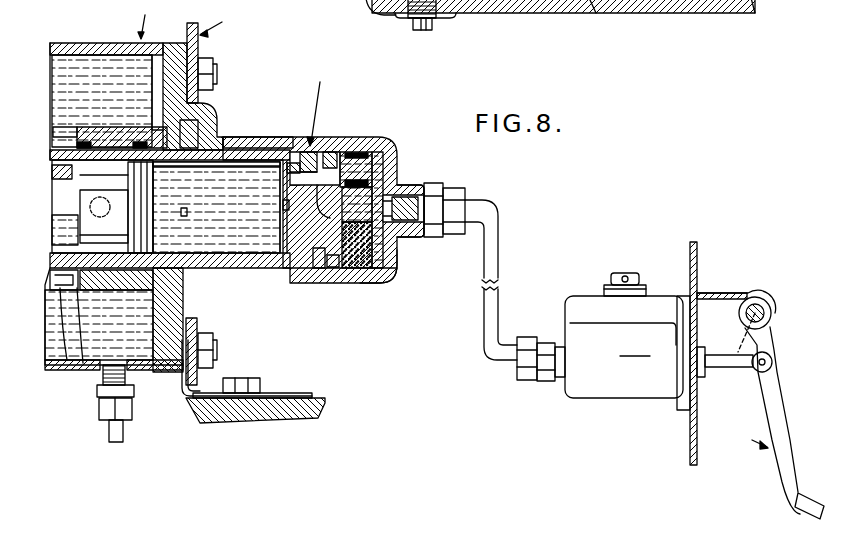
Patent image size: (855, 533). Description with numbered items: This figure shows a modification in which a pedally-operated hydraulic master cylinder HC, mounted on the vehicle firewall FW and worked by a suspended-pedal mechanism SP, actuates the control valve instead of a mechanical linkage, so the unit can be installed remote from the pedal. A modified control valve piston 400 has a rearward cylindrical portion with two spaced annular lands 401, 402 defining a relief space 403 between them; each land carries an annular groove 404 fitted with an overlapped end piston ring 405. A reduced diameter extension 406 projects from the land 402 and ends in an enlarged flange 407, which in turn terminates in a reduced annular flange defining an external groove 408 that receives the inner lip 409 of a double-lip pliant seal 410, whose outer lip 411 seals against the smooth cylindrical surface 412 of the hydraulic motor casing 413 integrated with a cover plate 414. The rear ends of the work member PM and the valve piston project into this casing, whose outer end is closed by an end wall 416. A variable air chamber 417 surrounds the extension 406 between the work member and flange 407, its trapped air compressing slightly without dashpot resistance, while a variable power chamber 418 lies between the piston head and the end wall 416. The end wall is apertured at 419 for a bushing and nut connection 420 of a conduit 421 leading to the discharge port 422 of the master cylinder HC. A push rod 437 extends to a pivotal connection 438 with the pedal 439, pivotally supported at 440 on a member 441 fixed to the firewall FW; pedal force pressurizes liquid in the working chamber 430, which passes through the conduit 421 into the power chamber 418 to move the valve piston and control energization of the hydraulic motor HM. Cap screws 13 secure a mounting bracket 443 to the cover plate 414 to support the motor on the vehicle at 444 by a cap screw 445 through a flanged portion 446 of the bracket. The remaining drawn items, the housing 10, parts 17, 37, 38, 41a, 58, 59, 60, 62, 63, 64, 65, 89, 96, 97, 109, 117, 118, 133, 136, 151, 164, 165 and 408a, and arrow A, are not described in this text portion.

The housing 10 is at (58, 47).
The cap screws 13 is at (205, 72).
The flange 17 is at (166, 45).
The plate 37 is at (590, 13).
The reservoir 38 is at (80, 58).
The plate 41a is at (690, 0).
The member 58 is at (348, 11).
The member 59 is at (350, 12).
The member 60 is at (287, 5).
The bolt 62 is at (101, 381).
The nut 63 is at (132, 388).
The nut 64 is at (108, 412).
The rod 65 is at (115, 443).
The boot 89 is at (70, 283).
The bolt 96 is at (410, 16).
The nut 97 is at (432, 26).
The piston 109 is at (83, 132).
The piston 117 is at (130, 237).
The seal 118 is at (142, 194).
The seal 133 is at (112, 150).
The wall 136 is at (98, 364).
The spring 151 is at (80, 188).
The port 164 is at (64, 175).
The port 165 is at (62, 220).
The control valve piston 400 is at (284, 150).
The annular land 401 is at (150, 163).
The annular land 402 is at (288, 226).
The annular relief space 403 is at (216, 165).
The annular groove 404 is at (313, 152).
The piston ring 405 is at (188, 214).
The reduced diameter extension 406 is at (318, 270).
The enlarged diameter flange 407 is at (338, 278).
The annular flange and external annular groove 408 is at (379, 160).
The passage 408a is at (386, 182).
The inner lip 409 is at (373, 172).
The double-lip ring-type pliant seal 410 is at (373, 282).
The outer lip 411 is at (343, 165).
The smooth cylindrical surface 412 is at (262, 269).
The hydraulic motor casing 413 is at (266, 137).
The cover plate 414 is at (176, 372).
The end wall 416 is at (396, 273).
The variable air chamber 417 is at (311, 268).
The variable power chamber 418 is at (381, 196).
The central aperture 419 is at (399, 230).
The bushing and nut connection 420 is at (456, 195).
The conduit 421 is at (493, 272).
The discharge port 422 is at (548, 382).
The working chamber 430 is at (604, 396).
The push rod 437 is at (740, 369).
The pivotal connection 438 is at (771, 356).
The pedal 439 is at (779, 481).
The pivot 440 is at (763, 308).
The member 441 is at (726, 293).
The mounting bracket 443 is at (202, 408).
The mounting location 444 is at (291, 421).
The cap screw 445 is at (262, 383).
The flanged portion 446 is at (313, 396).
The arrow A is at (145, 19).
The hydraulic motor HM is at (220, 195).
The work member PM is at (323, 171).
The vehicle firewall FW is at (700, 250).
The firewall-mounted master cylinder HC is at (635, 345).
The suspended-pedal mechanism SP is at (747, 440).